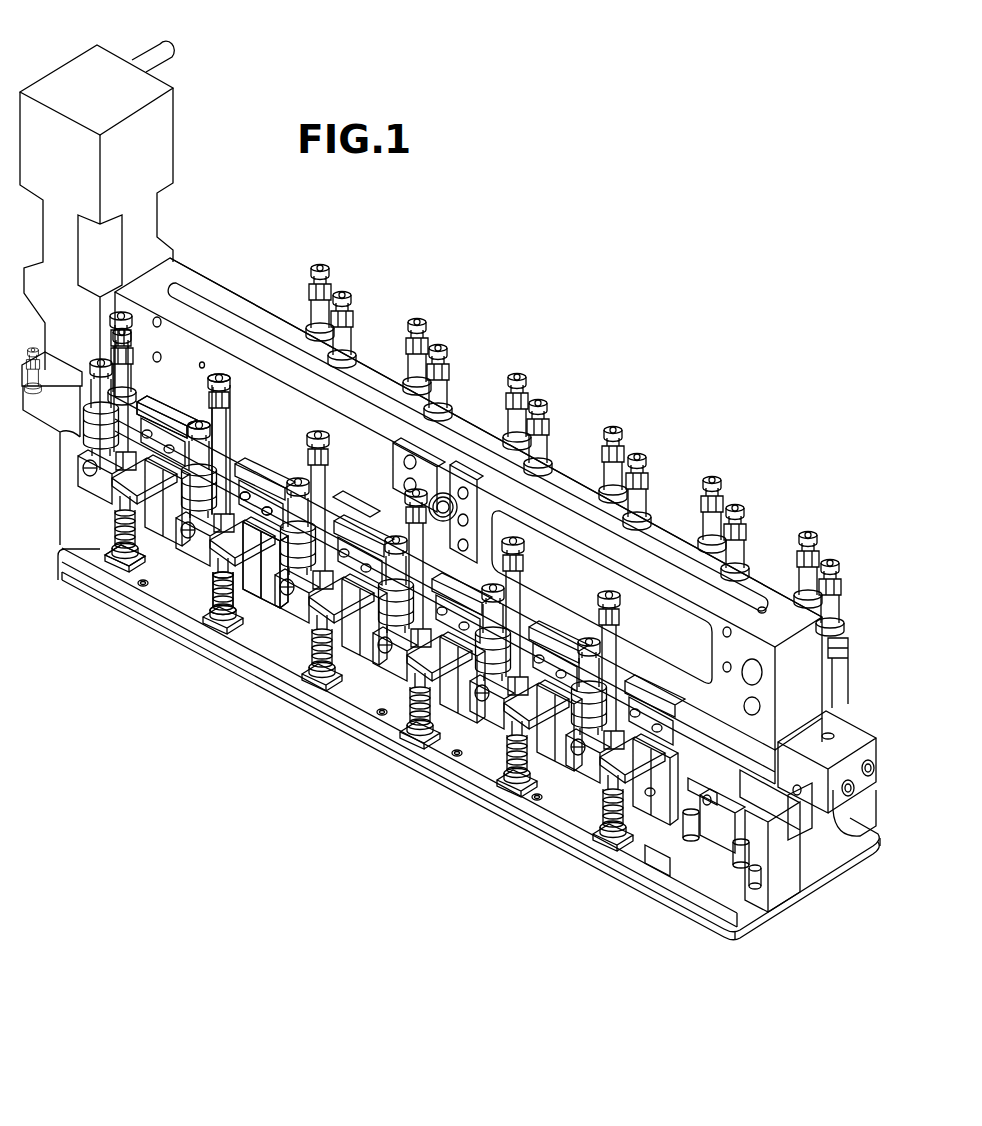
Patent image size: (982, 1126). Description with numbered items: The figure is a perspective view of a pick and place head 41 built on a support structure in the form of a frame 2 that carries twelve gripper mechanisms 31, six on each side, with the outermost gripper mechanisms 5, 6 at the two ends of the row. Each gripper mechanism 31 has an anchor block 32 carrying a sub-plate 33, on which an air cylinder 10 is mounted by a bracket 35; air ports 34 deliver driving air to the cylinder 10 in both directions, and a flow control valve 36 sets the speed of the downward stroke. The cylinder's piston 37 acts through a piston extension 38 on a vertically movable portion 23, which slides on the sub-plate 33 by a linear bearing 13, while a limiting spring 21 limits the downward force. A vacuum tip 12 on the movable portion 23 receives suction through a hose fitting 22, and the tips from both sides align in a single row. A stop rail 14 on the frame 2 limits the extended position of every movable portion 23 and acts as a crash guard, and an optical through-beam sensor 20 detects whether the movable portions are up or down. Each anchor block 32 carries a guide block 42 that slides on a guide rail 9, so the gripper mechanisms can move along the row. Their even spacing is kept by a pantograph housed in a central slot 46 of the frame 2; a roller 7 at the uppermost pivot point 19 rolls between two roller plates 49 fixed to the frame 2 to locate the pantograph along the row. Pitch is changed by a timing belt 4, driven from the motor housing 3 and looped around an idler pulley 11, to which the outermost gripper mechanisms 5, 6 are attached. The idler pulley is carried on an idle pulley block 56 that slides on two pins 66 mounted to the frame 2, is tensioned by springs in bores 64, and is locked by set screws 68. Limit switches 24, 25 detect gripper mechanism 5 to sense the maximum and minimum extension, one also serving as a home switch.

The frame 2 is at (785, 600).
The motor housing 3 is at (80, 72).
The timing belt 4 is at (740, 772).
The outermost gripper mechanism 5 is at (98, 547).
The outermost gripper mechanism 6 is at (853, 648).
The roller 7 is at (433, 460).
The guide rail 9 is at (710, 800).
The air cylinder 10 is at (223, 453).
The idler pulley 11 is at (800, 803).
The vacuum tip 12 is at (284, 640).
The linear bearing 13 is at (262, 580).
The stop rail 14 is at (662, 863).
The pivot point 19 is at (450, 510).
The optical through-beam sensor 20 is at (755, 886).
The limiting spring 21 is at (213, 597).
The hose fitting 22 is at (628, 740).
The movable portion 23 is at (272, 570).
The limit switch 24 is at (162, 410).
The limit switch 25 is at (340, 497).
The gripper mechanism 31 is at (696, 477).
The anchor block 32 is at (662, 807).
The sub-plate 33 is at (285, 520).
The air port 34 is at (222, 385).
The bracket 35 is at (262, 535).
The flow control valve 36 is at (120, 567).
The piston 37 is at (203, 570).
The piston extension 38 is at (213, 573).
The pick and place head 41 is at (608, 352).
The guide block 42 is at (693, 803).
The central slot 46 is at (717, 587).
The roller plate 49 is at (450, 500).
The idle pulley block 56 is at (850, 720).
The bore 64 is at (862, 770).
The pin 66 is at (848, 790).
The set screw 68 is at (800, 797).